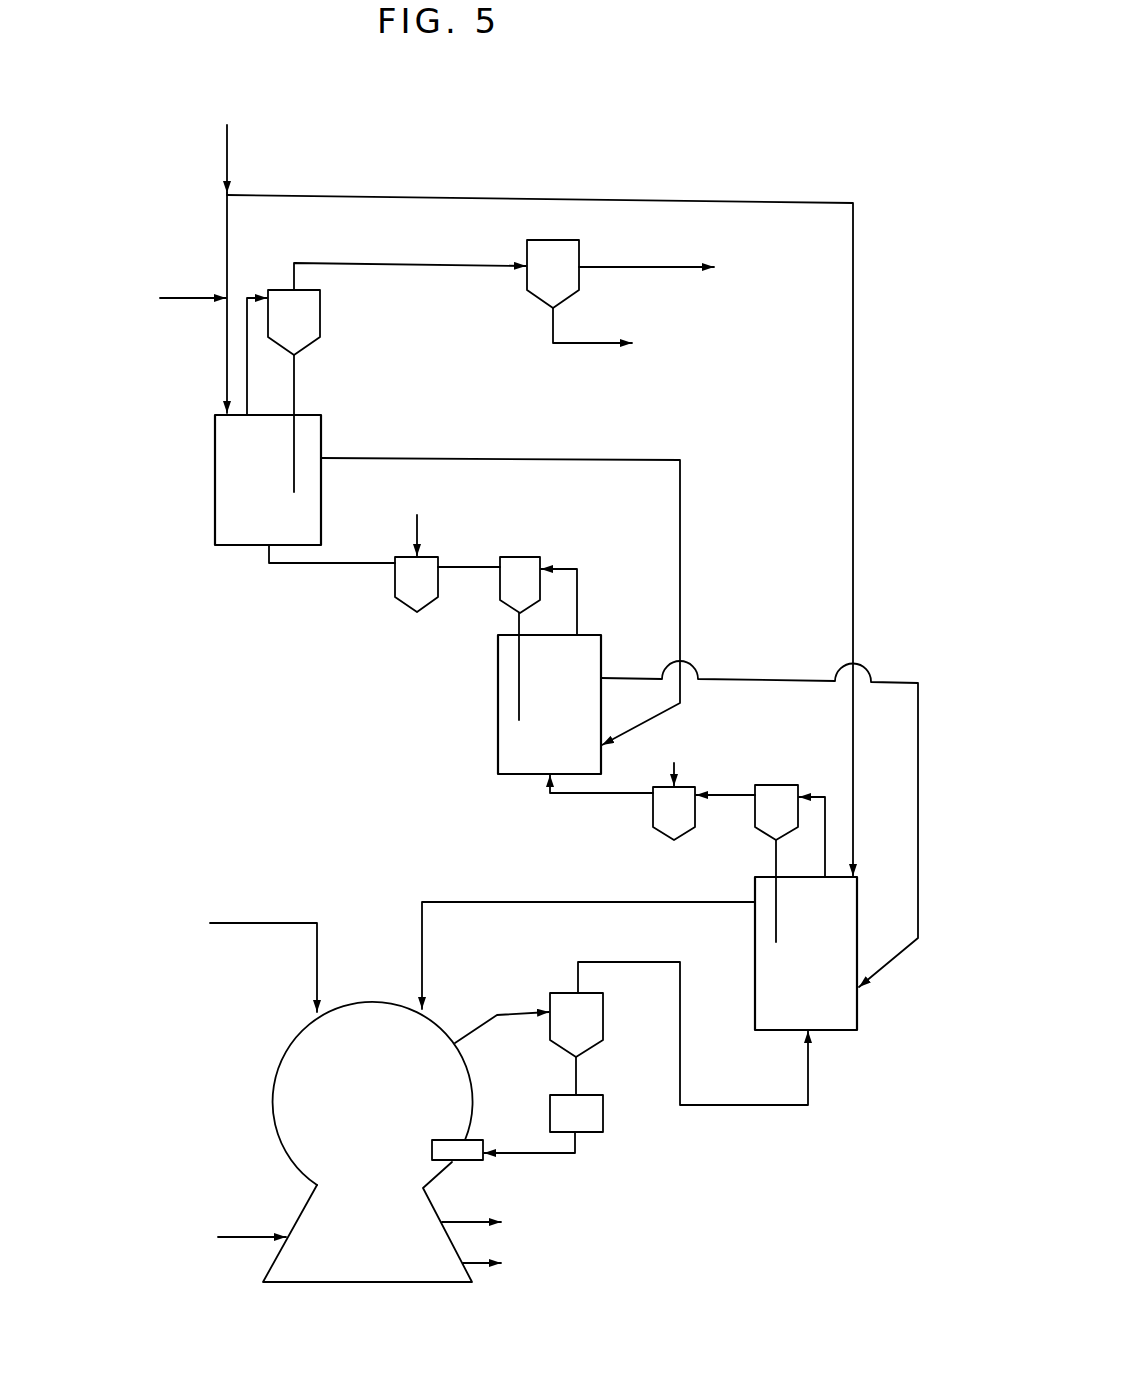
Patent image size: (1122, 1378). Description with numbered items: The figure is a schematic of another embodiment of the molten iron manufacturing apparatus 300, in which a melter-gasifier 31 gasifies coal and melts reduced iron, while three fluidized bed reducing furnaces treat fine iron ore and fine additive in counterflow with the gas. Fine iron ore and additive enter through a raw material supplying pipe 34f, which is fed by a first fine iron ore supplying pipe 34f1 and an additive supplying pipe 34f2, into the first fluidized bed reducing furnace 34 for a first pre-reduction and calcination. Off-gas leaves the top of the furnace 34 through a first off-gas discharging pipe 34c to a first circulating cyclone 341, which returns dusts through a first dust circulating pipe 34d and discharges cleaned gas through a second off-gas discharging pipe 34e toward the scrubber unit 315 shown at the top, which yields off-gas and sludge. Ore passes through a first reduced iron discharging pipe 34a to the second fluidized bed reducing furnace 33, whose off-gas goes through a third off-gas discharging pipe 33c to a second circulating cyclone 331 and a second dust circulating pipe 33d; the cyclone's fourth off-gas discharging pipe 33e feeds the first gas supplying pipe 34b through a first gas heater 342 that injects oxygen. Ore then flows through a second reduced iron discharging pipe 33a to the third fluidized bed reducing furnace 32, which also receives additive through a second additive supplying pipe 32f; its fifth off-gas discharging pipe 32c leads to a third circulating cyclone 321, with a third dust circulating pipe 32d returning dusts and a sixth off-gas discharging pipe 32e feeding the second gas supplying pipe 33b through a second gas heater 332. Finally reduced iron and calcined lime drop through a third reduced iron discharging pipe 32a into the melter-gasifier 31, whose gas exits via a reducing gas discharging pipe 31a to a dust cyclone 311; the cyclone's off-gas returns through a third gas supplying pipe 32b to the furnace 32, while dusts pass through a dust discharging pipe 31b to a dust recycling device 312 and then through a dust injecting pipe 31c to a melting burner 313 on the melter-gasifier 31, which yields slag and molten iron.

The molten iron manufacturing apparatus 300 is at (596, 143).
The melter-gasifier 31 is at (368, 1142).
The dust cyclone 311 is at (605, 1030).
The dust recycling device 312 is at (605, 1125).
The melting burner 313 is at (462, 1162).
The reducing gas discharging pipe 31a is at (483, 1027).
The dust discharging pipe 31b is at (580, 1072).
The dust injecting pipe 31c is at (548, 1158).
The third fluidized bed reducing furnace 32 is at (806, 953).
The third circulating cyclone 321 is at (758, 835).
The third reduced iron discharging pipe 32a is at (616, 905).
The third gas supplying pipe 32b is at (758, 1110).
The fifth off-gas discharging pipe 32c is at (818, 830).
The third dust circulating pipe 32d is at (776, 920).
The sixth off-gas discharging pipe 32e is at (733, 795).
The second additive supplying pipe 32f is at (368, 193).
The second fluidized bed reducing furnace 33 is at (549, 704).
The second circulating cyclone 331 is at (533, 557).
The second gas heater 332 is at (660, 830).
The second reduced iron discharging pipe 33a is at (750, 678).
The second gas supplying pipe 33b is at (600, 797).
The third off-gas discharging pipe 33c is at (577, 593).
The second dust circulating pipe 33d is at (517, 657).
The fourth off-gas discharging pipe 33e is at (472, 563).
The first fluidized bed reducing furnace 34 is at (268, 480).
The first circulating cyclone 341 is at (322, 319).
The first gas heater 342 is at (395, 587).
The first reduced iron discharging pipe 34a is at (408, 457).
The first gas supplying pipe 34b is at (337, 568).
The first off-gas discharging pipe 34c is at (253, 290).
The first dust circulating pipe 34d is at (300, 396).
The second off-gas discharging pipe 34e is at (412, 262).
The raw material supplying pipe 34f is at (224, 353).
The first fine iron ore supplying pipe 34f1 is at (185, 293).
The additive supplying pipe 34f2 is at (230, 180).
The scrubber 315 is at (580, 253).